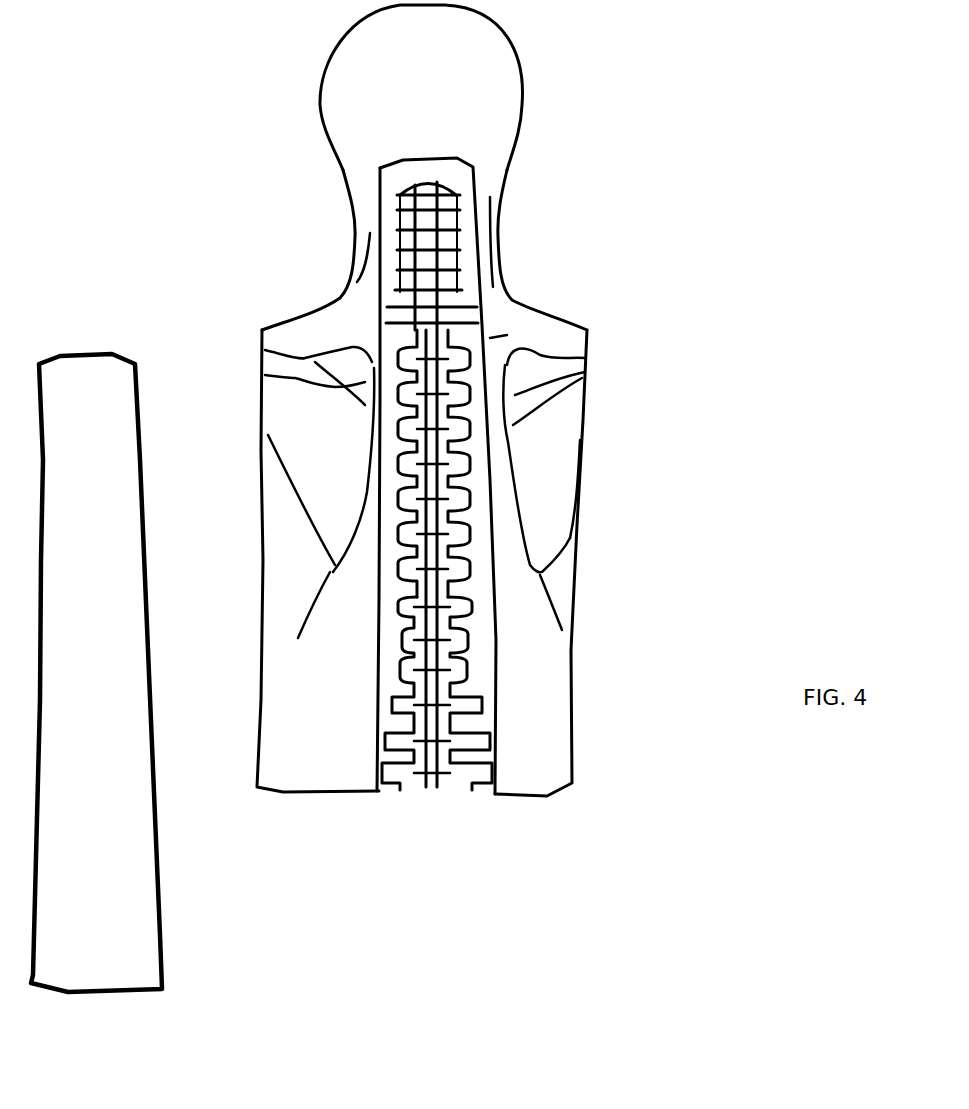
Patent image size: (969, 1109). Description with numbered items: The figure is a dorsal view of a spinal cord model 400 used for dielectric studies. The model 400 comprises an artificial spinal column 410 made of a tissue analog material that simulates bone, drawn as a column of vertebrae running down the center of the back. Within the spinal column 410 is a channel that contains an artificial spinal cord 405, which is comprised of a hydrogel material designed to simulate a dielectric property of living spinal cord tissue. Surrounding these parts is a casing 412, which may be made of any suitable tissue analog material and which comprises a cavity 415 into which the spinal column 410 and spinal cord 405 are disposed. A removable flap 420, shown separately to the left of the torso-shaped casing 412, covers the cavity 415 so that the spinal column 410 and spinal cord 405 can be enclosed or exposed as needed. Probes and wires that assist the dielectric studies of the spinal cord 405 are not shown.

The spinal cord model 400 is at (620, 412).
The artificial spinal cord 405 is at (430, 362).
The artificial spinal column 410 is at (476, 312).
The casing 412 is at (560, 748).
The cavity 415 is at (478, 655).
The removable flap 420 is at (167, 935).